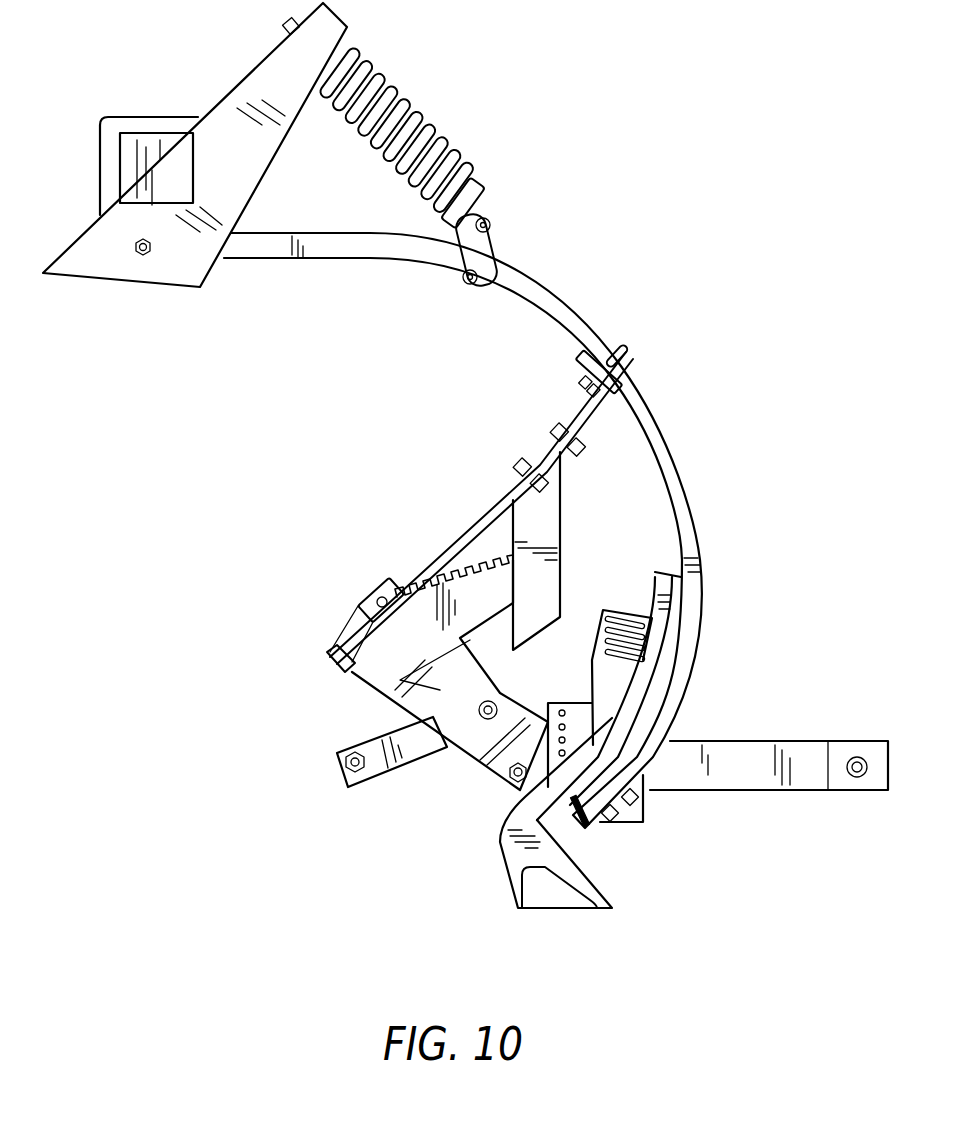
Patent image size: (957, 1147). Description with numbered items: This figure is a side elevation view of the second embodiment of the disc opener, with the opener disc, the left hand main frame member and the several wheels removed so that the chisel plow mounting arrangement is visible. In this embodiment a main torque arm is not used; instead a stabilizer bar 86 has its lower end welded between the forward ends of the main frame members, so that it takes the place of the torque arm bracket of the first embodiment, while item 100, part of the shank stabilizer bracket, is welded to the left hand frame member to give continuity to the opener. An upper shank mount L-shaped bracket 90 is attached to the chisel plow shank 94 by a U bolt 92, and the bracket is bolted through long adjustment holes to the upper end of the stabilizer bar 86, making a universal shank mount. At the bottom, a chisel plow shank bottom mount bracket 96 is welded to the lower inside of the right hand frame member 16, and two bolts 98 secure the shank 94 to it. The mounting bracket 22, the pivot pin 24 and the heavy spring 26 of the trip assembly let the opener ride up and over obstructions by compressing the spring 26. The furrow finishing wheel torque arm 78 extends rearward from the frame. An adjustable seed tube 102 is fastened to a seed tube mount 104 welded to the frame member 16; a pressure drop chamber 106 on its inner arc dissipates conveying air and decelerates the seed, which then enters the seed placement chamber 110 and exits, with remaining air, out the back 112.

The right hand frame member 16 is at (390, 680).
The mounting bracket 22 is at (247, 167).
The pivot pin 24 is at (135, 254).
The heavy spring 26 is at (430, 127).
The furrow finishing wheel torque arm 78 is at (800, 773).
The stabilizer bar 86 is at (510, 497).
The upper shank mount L-shaped bracket 90 is at (583, 387).
The U bolt 92 is at (625, 350).
The chisel plow shank 94 is at (687, 488).
The chisel plow shank bottom mount bracket 96 is at (590, 825).
The bolts 98 is at (647, 797).
The shank stabilizer bracket part 100 is at (540, 530).
The adjustable seed tube 102 is at (657, 657).
The seed tube mount 104 is at (575, 733).
The pressure drop chamber 106 is at (618, 680).
The seed placement chamber 110 is at (518, 850).
The back of the seed placement chamber 112 is at (592, 905).